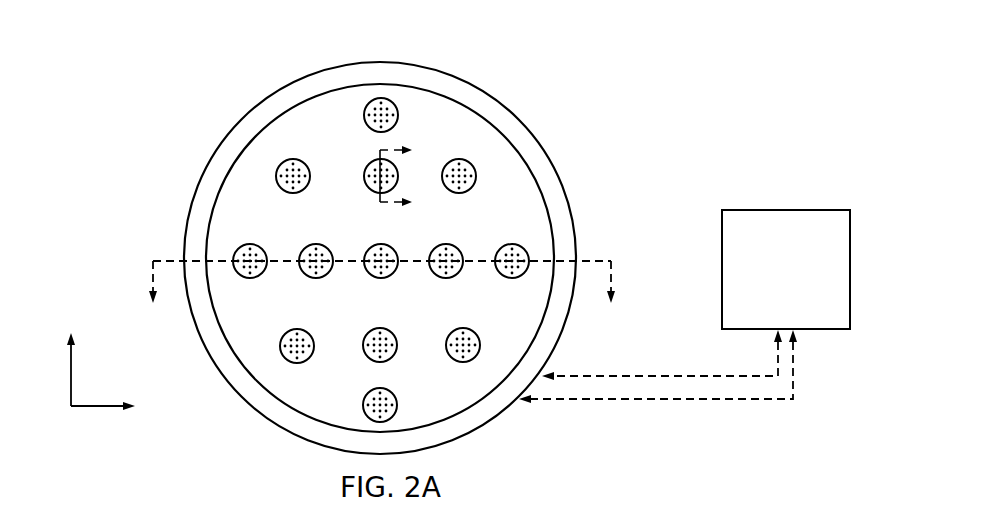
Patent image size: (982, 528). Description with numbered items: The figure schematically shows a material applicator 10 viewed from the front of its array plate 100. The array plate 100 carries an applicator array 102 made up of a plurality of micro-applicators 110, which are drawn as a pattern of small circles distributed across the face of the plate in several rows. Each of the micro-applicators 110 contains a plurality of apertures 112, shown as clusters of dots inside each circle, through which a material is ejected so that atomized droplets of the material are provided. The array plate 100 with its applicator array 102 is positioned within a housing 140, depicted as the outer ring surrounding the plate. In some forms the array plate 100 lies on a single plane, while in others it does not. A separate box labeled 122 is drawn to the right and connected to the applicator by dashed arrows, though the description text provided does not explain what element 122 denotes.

The material applicator 10 is at (606, 119).
The array plate 100 is at (458, 99).
The applicator array 102 is at (236, 196).
The micro-applicators 110 is at (265, 245).
The apertures 112 is at (295, 343).
The controller 122 is at (684, 306).
The housing 140 is at (580, 203).